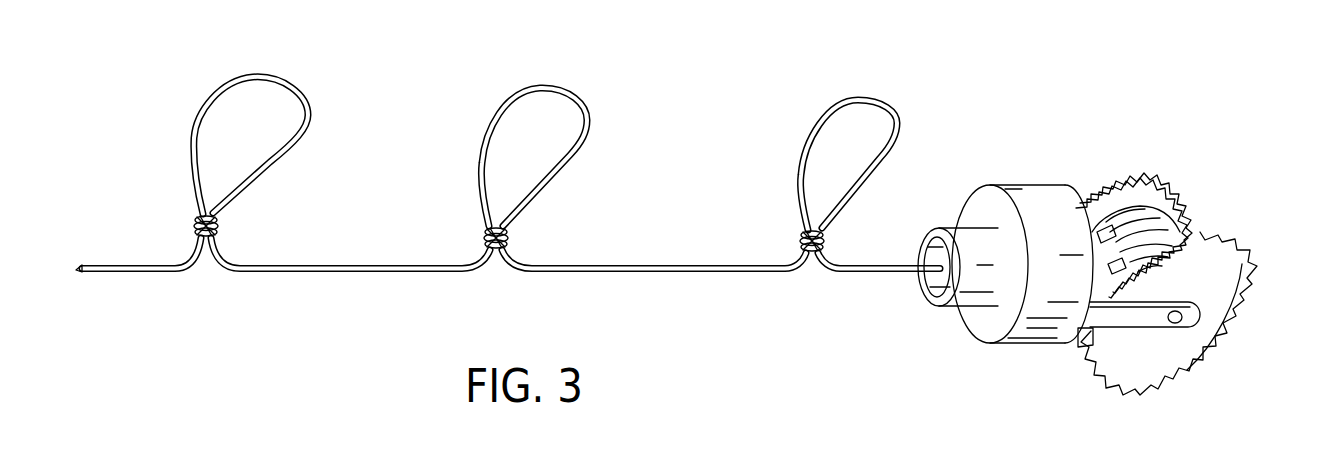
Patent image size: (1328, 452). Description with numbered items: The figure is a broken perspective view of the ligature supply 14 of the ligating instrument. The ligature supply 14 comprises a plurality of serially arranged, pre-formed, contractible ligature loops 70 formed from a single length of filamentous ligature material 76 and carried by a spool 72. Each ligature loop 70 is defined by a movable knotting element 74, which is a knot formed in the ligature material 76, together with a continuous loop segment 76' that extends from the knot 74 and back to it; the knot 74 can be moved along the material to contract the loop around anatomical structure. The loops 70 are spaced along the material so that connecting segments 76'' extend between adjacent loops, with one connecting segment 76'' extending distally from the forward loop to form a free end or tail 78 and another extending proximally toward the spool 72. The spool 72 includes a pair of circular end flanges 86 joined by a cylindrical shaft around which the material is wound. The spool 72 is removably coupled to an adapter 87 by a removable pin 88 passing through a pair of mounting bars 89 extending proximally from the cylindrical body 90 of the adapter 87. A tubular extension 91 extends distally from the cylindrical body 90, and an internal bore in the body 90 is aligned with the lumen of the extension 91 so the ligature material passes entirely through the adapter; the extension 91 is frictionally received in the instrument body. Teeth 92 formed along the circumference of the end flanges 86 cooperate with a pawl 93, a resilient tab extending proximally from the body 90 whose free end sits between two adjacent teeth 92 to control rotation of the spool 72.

The ligature supply 14 is at (648, 182).
The ligature loop 70 is at (248, 76).
The spool 72 is at (1163, 171).
The knotting element 74 is at (192, 228).
The ligature material 76 is at (511, 300).
The loop segment 76' is at (552, 137).
The connecting segment 76'' is at (494, 317).
The tail 78 is at (82, 268).
The end flange 86 is at (1092, 193).
The adapter 87 is at (1014, 185).
The pin 88 is at (1182, 327).
The mounting bar 89 is at (1145, 320).
The cylindrical body 90 is at (1040, 308).
The tubular extension 91 is at (972, 276).
The teeth 92 is at (1120, 176).
The pawl 93 is at (1082, 335).